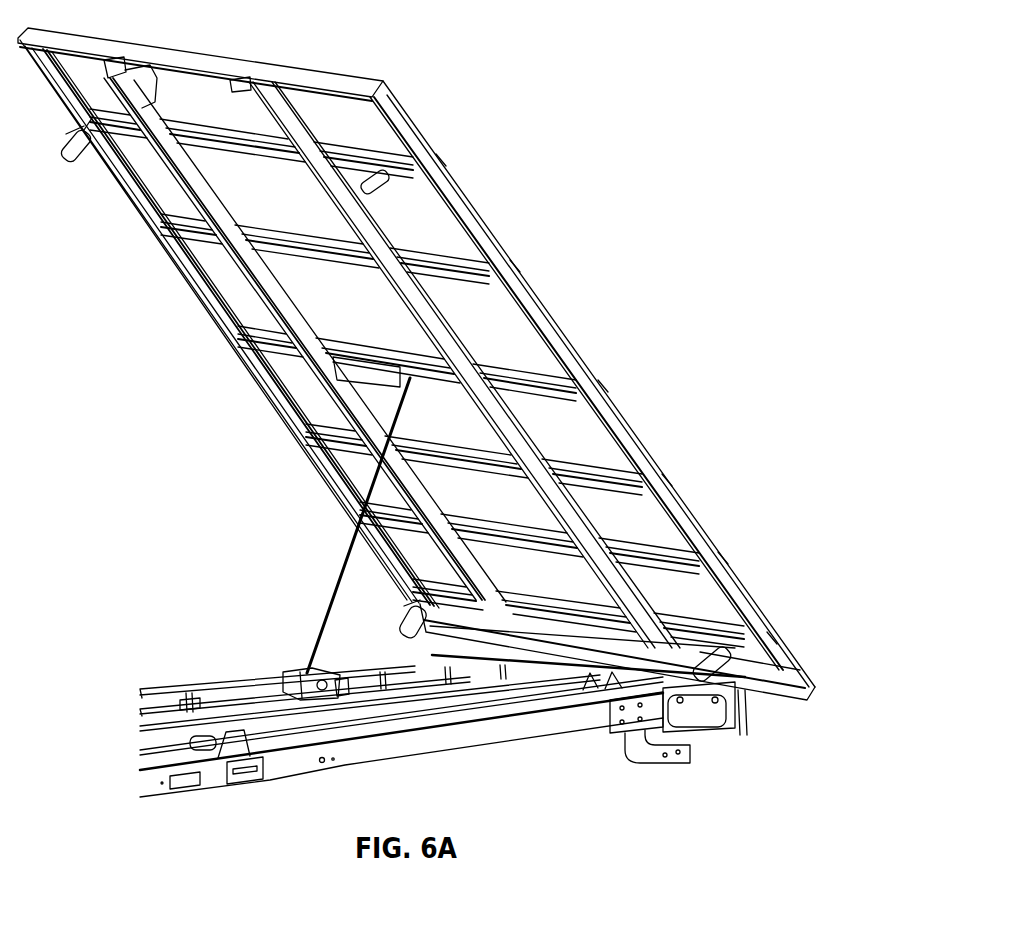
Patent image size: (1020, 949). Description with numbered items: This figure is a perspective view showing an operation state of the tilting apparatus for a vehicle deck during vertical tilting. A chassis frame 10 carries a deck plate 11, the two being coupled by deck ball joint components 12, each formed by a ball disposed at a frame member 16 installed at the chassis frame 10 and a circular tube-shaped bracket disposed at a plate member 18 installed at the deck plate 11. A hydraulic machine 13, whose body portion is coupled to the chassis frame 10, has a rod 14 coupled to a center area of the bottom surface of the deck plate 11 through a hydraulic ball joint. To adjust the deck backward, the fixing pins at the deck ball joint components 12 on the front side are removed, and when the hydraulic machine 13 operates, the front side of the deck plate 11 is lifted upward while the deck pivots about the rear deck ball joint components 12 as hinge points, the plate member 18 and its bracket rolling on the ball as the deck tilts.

The chassis frame 10 is at (425, 740).
The deck plate 11 is at (563, 433).
The deck ball joint component 12 is at (400, 617).
The hydraulic machine 13 is at (282, 667).
The rod 14 is at (350, 547).
The frame member 16 is at (578, 642).
The plate member 18 is at (620, 622).